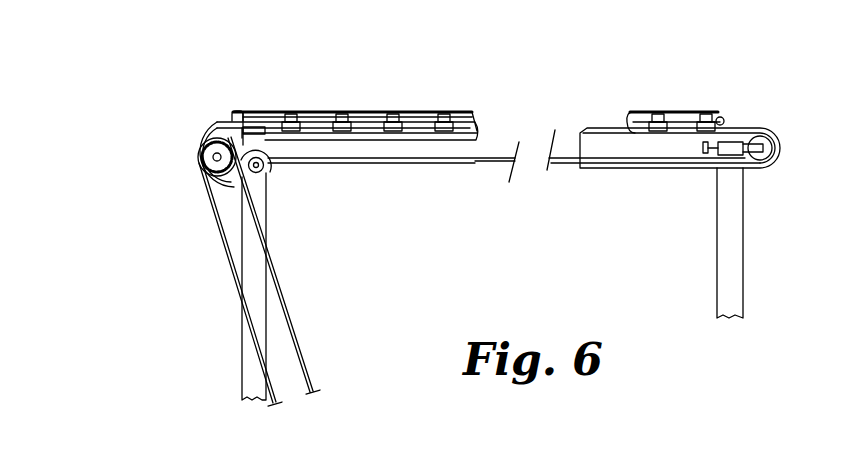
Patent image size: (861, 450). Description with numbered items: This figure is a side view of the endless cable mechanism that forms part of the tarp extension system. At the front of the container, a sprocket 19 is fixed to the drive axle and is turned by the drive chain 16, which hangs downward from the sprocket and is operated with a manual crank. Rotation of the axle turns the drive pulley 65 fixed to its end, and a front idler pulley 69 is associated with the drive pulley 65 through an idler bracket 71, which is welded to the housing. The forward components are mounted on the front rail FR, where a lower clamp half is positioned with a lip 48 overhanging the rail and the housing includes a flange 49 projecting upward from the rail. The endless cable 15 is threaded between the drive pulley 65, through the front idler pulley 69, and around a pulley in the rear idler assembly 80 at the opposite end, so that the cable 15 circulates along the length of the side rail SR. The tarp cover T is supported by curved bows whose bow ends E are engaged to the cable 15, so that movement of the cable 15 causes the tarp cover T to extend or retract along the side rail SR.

The sprocket 19 is at (205, 150).
The flange 49 is at (236, 114).
The lip 48 is at (254, 130).
The front rail FR is at (256, 147).
The tarp cover T is at (335, 111).
The bow end E is at (438, 112).
The idler bracket 71 is at (268, 176).
The front idler pulley 69 is at (263, 174).
The side rail SR is at (370, 163).
The endless cable 15 is at (497, 163).
The drive pulley 65 is at (215, 186).
The drive chain 16 is at (290, 316).
The rear idler assembly 80 is at (770, 122).